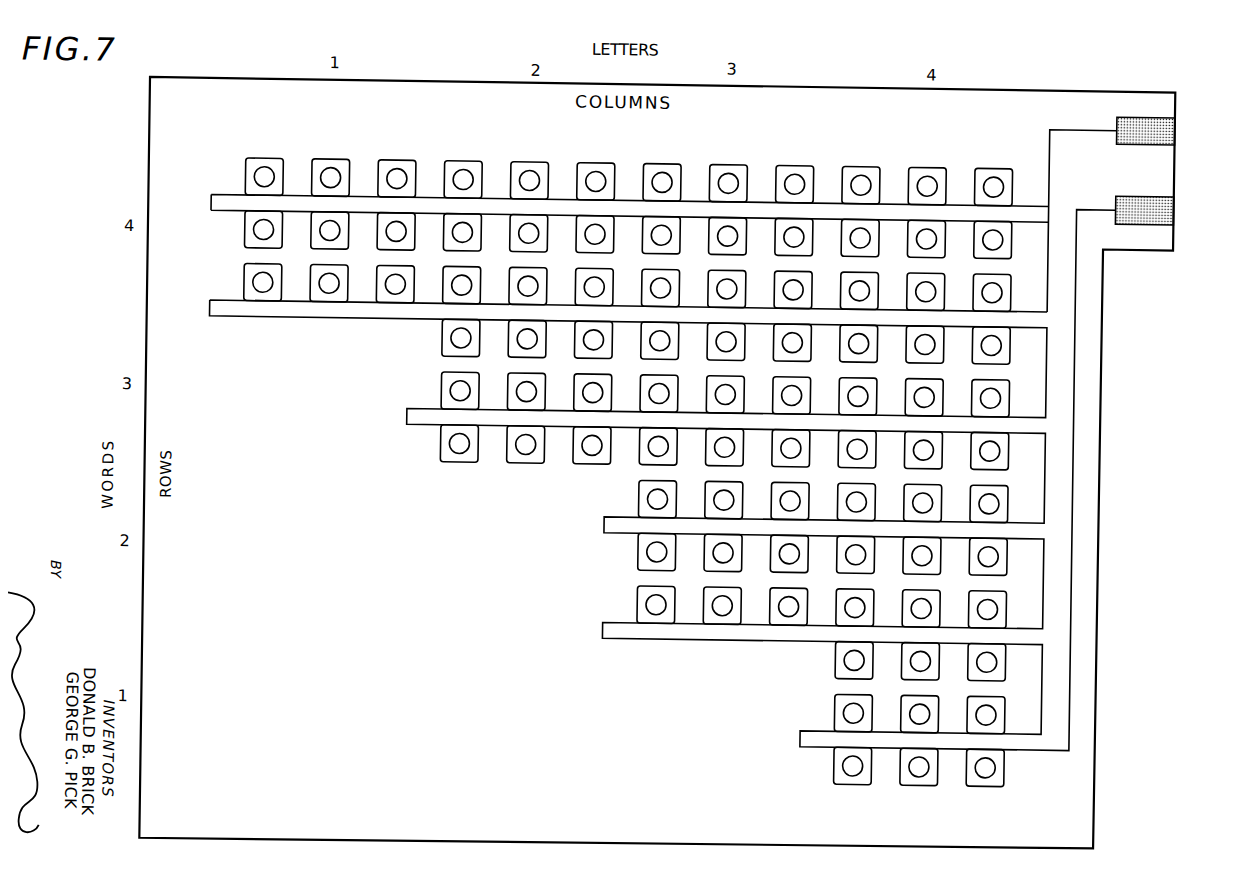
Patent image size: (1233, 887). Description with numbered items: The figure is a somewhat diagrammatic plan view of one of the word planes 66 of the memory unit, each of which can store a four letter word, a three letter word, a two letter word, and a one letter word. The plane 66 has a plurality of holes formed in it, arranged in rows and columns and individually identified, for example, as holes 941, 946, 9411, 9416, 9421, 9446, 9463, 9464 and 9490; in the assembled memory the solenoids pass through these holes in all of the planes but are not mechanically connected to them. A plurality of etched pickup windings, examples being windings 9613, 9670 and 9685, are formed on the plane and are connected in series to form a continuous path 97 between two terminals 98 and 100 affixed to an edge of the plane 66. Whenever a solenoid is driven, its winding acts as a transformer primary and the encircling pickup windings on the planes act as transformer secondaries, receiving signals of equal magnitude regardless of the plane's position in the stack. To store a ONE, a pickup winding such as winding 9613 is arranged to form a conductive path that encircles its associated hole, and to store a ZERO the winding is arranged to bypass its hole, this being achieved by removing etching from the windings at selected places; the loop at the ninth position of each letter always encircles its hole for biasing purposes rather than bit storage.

The hole 941 is at (266, 173).
The hole 946 is at (597, 172).
The hole 9411 is at (928, 172).
The hole 9416 is at (461, 233).
The hole 9421 is at (793, 233).
The hole 9446 is at (461, 386).
The hole 9463 is at (994, 444).
The hole 9464 is at (655, 493).
The hole 9490 is at (994, 755).
The pickup winding 9613 is at (246, 214).
The pickup winding 9670 is at (644, 549).
The pickup winding 9685 is at (842, 706).
The continuous path 97 is at (326, 317).
The terminal 98 is at (1174, 125).
The terminal 100 is at (1173, 206).
The plane 66 is at (1103, 338).